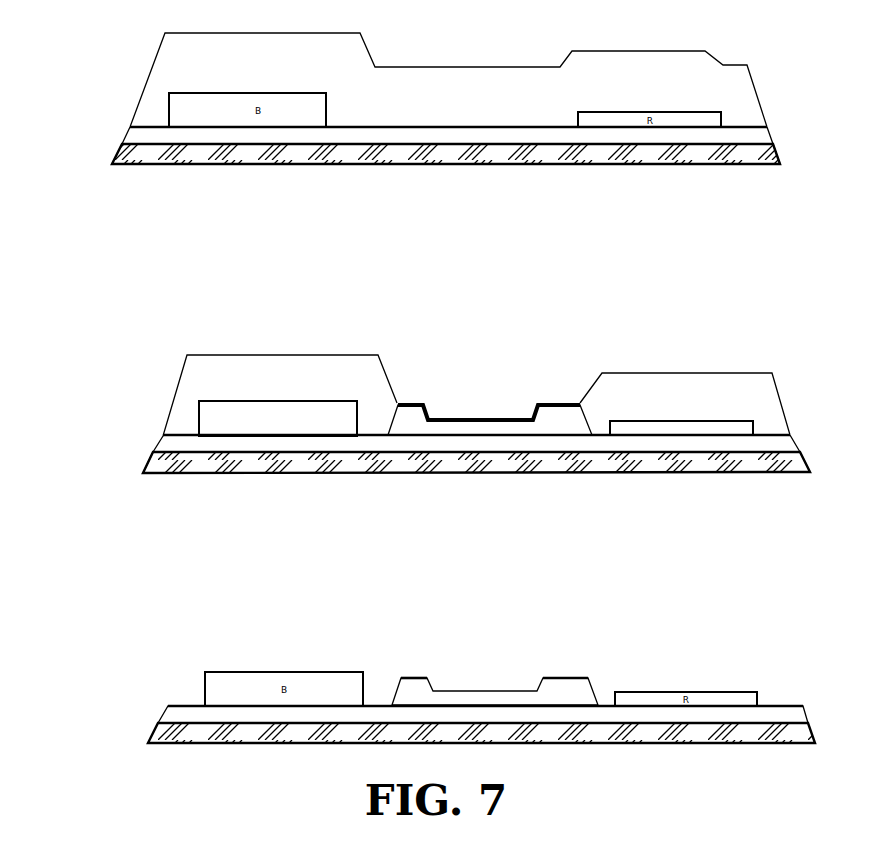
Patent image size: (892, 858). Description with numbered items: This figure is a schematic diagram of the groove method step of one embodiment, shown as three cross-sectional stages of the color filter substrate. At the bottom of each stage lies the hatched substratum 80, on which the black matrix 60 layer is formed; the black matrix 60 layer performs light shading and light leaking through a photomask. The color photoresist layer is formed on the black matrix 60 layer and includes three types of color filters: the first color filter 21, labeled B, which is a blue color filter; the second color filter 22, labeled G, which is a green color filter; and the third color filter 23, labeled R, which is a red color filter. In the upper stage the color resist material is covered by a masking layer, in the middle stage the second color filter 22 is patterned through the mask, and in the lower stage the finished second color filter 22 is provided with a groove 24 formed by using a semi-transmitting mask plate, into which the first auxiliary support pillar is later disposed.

The substratum 80 is at (115, 158).
The black matrix 60 is at (143, 142).
The first color filter 21 is at (230, 422).
The second color filter 22 is at (490, 361).
The third color filter 23 is at (742, 420).
The groove 24 is at (485, 680).